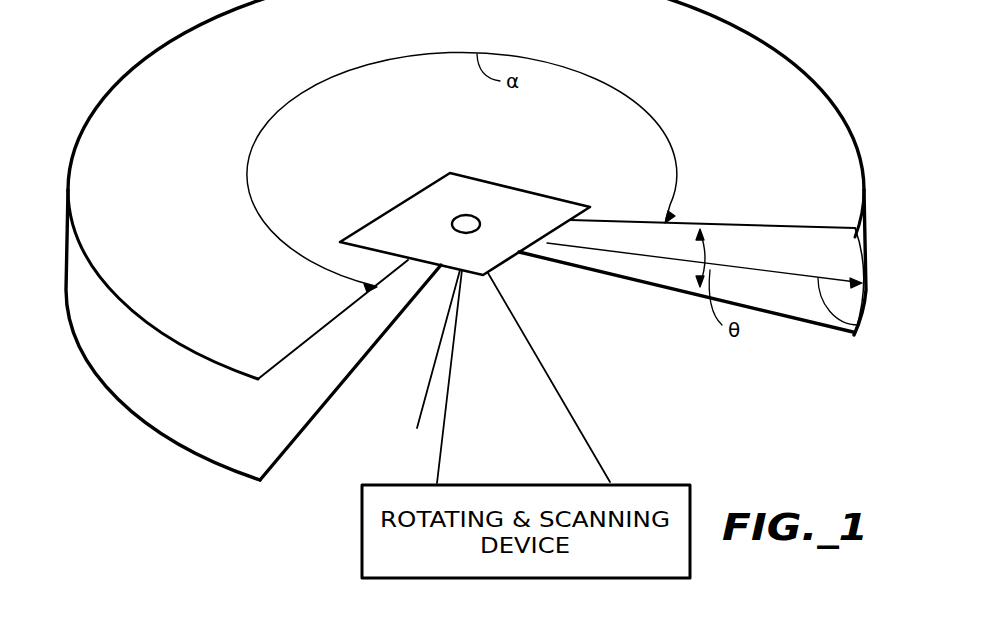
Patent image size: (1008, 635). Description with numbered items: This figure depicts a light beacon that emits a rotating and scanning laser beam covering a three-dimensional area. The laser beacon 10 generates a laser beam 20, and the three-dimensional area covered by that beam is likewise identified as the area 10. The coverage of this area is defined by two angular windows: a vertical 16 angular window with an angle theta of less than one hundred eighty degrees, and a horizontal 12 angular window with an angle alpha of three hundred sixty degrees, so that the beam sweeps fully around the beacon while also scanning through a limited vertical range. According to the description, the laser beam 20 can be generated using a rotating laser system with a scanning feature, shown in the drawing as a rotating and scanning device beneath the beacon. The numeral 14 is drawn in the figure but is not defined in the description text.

The laser beacon 10 is at (160, 497).
The horizontal angular window 12 is at (491, 196).
The top surface of disk 14 is at (752, 50).
The vertical angular window 16 is at (765, 312).
The laser beam 20 is at (867, 322).